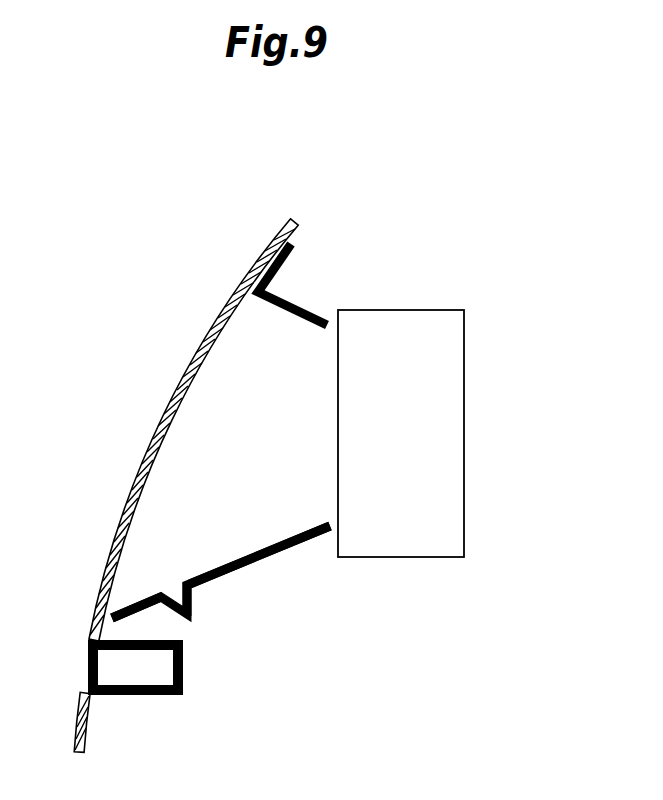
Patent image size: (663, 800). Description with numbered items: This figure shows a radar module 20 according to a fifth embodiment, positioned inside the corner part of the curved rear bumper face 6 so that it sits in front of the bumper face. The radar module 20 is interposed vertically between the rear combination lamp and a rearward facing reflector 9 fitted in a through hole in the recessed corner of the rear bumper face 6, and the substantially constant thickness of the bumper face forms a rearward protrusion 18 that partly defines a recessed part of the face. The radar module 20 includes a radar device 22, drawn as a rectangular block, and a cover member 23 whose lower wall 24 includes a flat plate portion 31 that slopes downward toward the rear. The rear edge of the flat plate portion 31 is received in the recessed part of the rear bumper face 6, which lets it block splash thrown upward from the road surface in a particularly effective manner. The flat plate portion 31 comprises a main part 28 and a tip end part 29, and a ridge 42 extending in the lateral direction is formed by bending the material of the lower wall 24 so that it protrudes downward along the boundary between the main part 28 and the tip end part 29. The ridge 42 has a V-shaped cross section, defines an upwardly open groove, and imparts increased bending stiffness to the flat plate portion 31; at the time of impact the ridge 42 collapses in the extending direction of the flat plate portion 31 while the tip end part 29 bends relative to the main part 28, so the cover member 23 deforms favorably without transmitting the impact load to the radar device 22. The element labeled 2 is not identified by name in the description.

The vehicle body panel 2 is at (165, 460).
The rear bumper face 6 is at (170, 405).
The reflector 9 is at (88, 670).
The rearward protrusion 18 is at (182, 670).
The radar module 20 is at (424, 365).
The radar device 22 is at (418, 322).
The cover member 23 is at (292, 296).
The lower wall 24 is at (202, 564).
The main part 28 is at (280, 540).
The tip end part 29 is at (137, 606).
The flat plate portion 31 is at (258, 556).
The ridge 42 is at (192, 604).